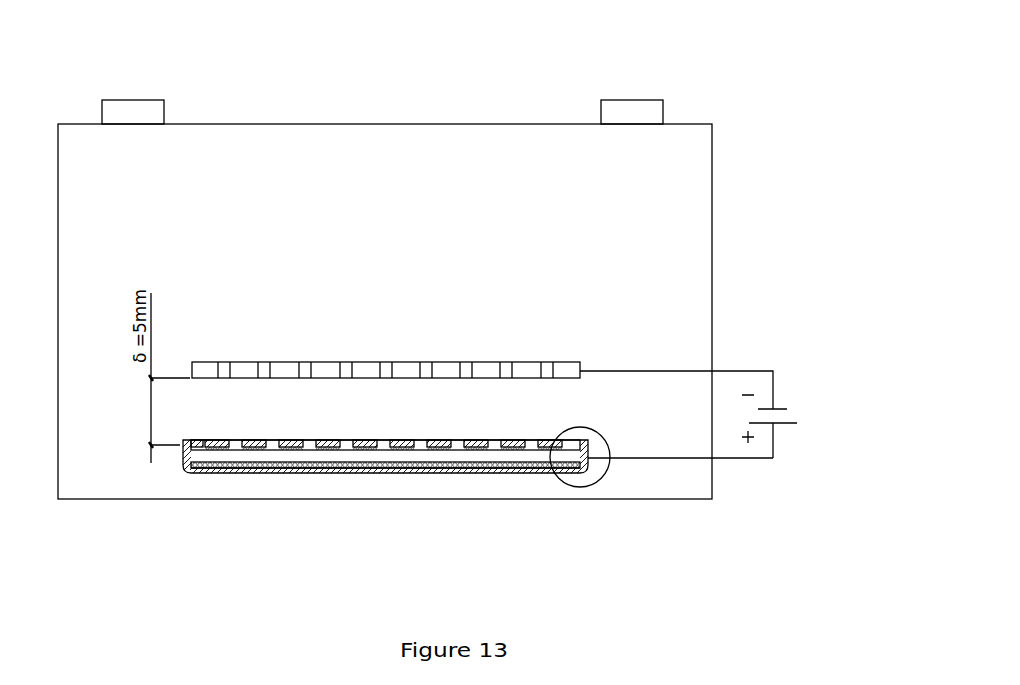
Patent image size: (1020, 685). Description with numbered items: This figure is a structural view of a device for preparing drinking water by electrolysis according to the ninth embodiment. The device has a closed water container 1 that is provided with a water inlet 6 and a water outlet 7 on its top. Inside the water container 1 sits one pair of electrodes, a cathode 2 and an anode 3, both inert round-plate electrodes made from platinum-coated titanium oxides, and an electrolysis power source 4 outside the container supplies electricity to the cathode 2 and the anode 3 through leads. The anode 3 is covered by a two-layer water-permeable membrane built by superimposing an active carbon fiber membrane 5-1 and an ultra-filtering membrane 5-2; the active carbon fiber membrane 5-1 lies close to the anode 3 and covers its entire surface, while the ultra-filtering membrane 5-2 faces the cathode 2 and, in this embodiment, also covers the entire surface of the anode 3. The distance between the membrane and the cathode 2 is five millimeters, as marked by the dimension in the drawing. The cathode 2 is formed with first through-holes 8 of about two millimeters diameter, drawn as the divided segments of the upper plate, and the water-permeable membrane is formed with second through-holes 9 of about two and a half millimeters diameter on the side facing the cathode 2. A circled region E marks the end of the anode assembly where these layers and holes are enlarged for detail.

The water container 1 is at (713, 345).
The cathode 2 is at (565, 371).
The anode 3 is at (485, 473).
The electrolysis power source 4 is at (775, 425).
The active carbon fiber membrane 5-1 is at (357, 473).
The ultra-filtering membrane 5-2 is at (287, 473).
The water inlet 6 is at (642, 107).
The water outlet 7 is at (135, 113).
The first through-holes 8 is at (548, 362).
The second through-holes 9 is at (572, 444).
The enlarged detail region E is at (603, 478).